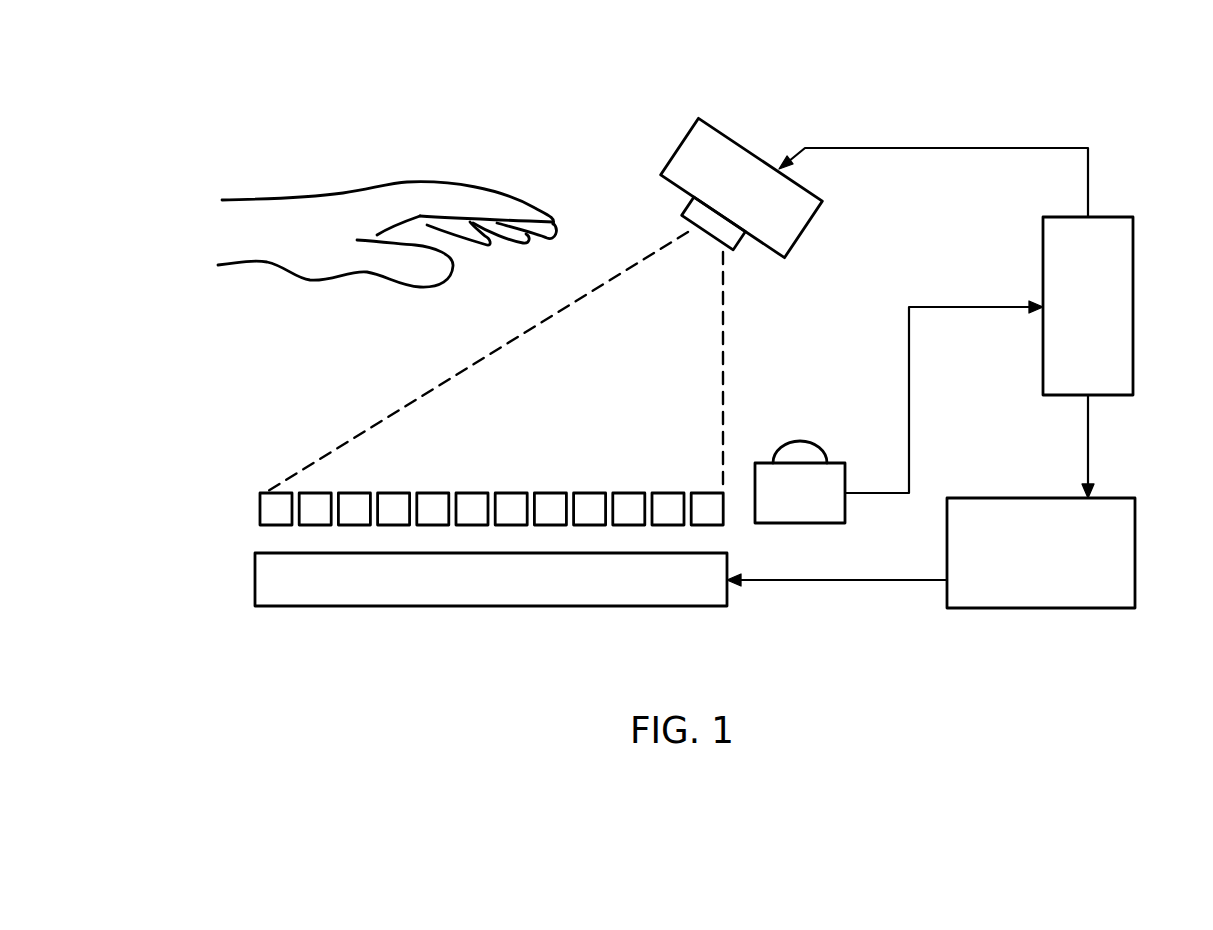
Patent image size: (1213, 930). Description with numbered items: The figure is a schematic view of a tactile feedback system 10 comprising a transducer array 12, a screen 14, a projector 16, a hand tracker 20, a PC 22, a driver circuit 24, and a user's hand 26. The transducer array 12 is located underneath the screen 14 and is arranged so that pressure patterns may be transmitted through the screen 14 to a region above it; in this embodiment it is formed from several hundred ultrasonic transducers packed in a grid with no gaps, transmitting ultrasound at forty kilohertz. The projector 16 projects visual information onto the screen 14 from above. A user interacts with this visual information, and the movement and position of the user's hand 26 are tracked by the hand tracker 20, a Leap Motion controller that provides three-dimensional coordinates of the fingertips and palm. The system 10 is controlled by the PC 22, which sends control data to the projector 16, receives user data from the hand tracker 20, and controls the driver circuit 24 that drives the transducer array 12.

The system 10 is at (477, 61).
The transducer array 12 is at (490, 606).
The screen 14 is at (262, 510).
The projector 16 is at (678, 143).
The hand tracker 20 is at (845, 518).
The PC 22 is at (1135, 305).
The driver circuit 24 is at (1135, 552).
The user's hand 26 is at (342, 206).